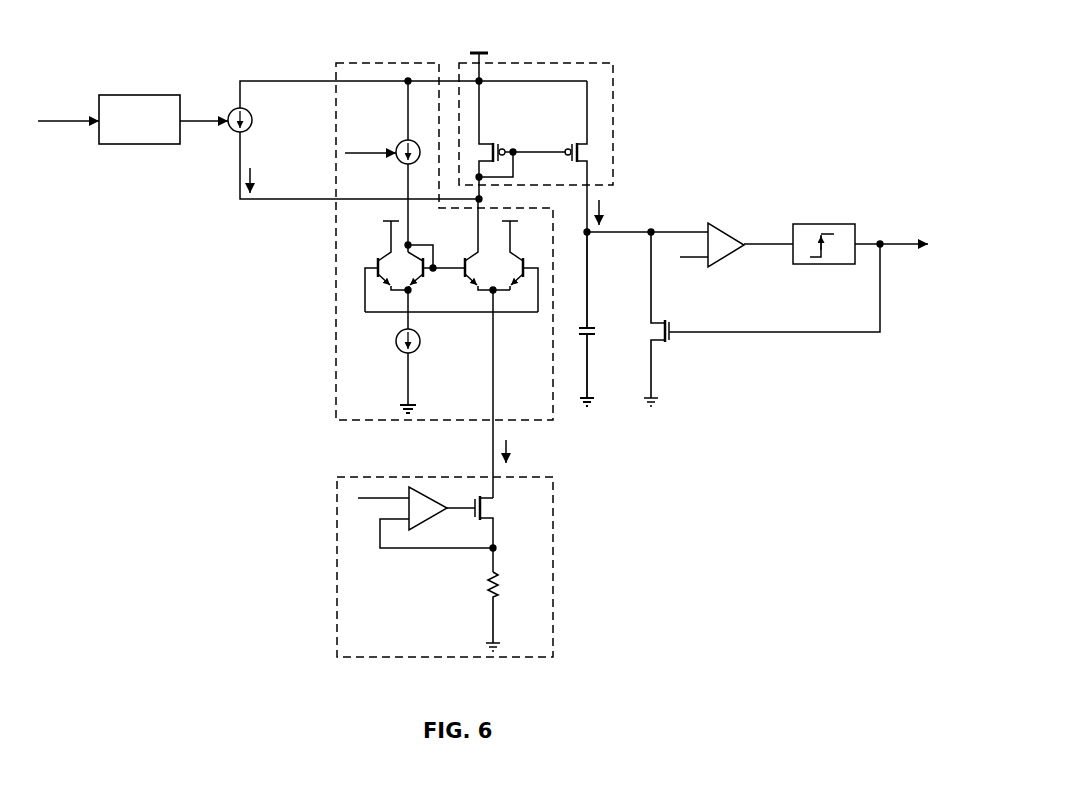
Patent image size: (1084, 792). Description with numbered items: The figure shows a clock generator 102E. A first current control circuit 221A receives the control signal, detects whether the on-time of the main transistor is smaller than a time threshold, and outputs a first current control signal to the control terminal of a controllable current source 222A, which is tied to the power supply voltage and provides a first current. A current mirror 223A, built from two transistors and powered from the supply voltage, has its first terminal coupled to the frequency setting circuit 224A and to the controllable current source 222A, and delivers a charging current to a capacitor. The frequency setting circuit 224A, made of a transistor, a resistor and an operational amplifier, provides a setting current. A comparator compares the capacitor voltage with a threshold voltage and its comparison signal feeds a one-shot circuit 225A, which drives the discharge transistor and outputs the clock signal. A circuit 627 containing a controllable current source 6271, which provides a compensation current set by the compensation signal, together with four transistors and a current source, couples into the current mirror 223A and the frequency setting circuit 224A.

The clock generator 102E is at (757, 33).
The first current control circuit 221A is at (116, 145).
The controllable current source 222A is at (249, 129).
The current mirror 223A is at (614, 88).
The frequency setting circuit 224A is at (362, 657).
The one-shot circuit 225A is at (807, 265).
The circuit 627 is at (346, 421).
The controllable current source 6271 is at (399, 161).